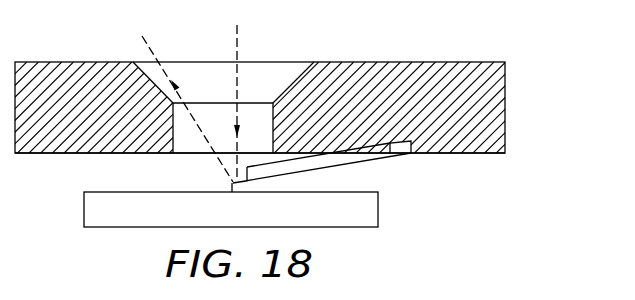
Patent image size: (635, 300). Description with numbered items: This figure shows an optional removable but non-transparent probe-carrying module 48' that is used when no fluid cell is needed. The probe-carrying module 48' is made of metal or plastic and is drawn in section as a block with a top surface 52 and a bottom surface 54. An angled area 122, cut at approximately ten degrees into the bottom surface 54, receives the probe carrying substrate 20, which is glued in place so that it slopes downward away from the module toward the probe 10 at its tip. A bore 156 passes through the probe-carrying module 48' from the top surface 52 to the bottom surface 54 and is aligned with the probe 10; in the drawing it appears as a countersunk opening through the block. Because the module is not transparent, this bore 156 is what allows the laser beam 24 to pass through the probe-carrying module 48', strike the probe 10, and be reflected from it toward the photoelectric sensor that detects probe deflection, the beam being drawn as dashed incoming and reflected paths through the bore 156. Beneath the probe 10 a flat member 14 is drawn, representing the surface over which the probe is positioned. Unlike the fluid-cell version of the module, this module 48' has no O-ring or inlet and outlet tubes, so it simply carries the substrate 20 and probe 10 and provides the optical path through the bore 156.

The top surface 52 is at (397, 62).
The bottom surface 54 is at (100, 155).
The bore 156 is at (268, 80).
The laser beam 24 is at (235, 39).
The probe carrying substrate 20 is at (345, 161).
The angled area 122 is at (402, 154).
The probe 10 is at (231, 192).
The base plate 14 is at (360, 212).
The probe-carrying module 48' is at (495, 236).